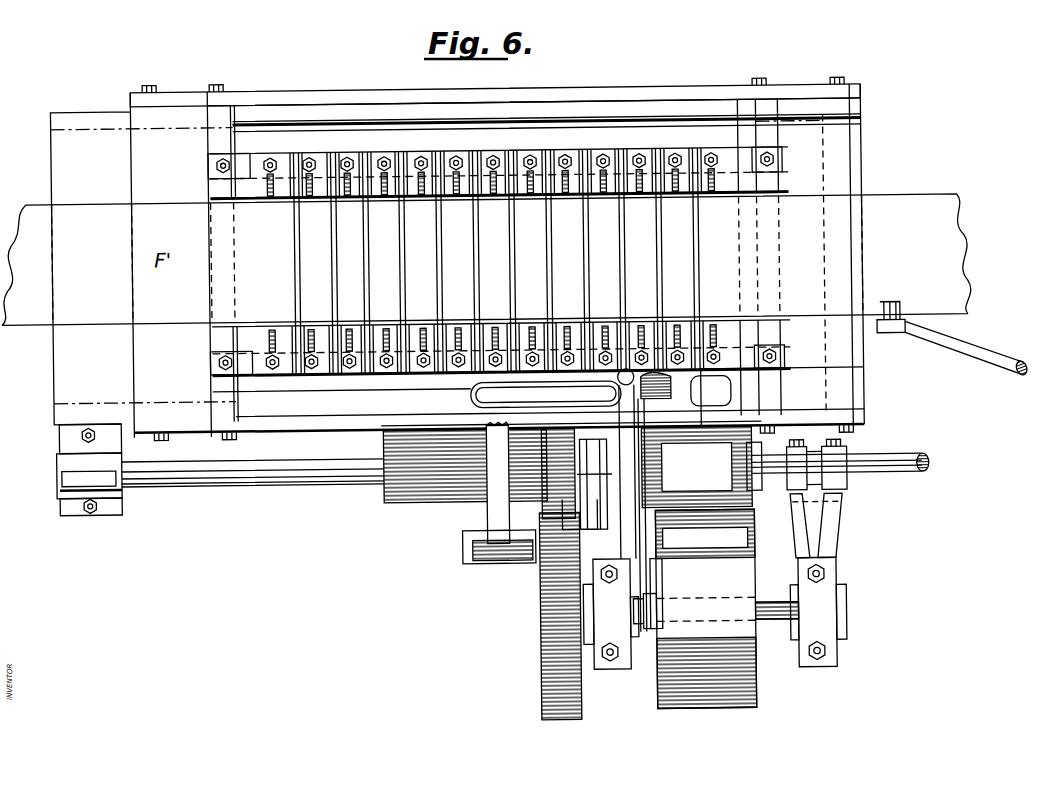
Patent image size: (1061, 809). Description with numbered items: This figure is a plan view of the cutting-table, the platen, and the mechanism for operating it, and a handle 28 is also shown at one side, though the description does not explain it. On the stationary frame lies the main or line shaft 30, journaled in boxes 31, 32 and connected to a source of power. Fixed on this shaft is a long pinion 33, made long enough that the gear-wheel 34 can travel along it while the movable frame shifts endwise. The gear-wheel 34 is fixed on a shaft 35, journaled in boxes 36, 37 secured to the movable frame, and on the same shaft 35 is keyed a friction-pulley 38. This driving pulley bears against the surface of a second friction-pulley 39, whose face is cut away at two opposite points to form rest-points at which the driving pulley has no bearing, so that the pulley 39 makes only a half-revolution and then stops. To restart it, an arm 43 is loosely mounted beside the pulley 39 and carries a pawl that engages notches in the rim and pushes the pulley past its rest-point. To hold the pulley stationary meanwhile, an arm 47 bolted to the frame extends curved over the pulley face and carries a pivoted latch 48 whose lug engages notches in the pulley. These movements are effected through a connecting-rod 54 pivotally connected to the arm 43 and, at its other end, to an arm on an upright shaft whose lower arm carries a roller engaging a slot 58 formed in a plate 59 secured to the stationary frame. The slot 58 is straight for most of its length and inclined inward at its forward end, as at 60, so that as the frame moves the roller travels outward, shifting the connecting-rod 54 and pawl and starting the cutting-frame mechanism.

The handle 28 is at (1040, 316).
The shaft 30 is at (276, 483).
The box 31 is at (55, 474).
The box 32 is at (845, 478).
The long pinion 33 is at (465, 480).
The gear-wheel 34 is at (545, 510).
The shaft 35 is at (588, 531).
The box 36 is at (842, 456).
The box 37 is at (594, 484).
The friction-pulley 38 is at (701, 466).
The friction-pulley 39 is at (751, 600).
The arm 43 is at (645, 640).
The arm 47 is at (705, 540).
The latch 48 is at (684, 631).
The connecting-rod 54 is at (635, 403).
The slot 58 is at (470, 389).
The plate 59 is at (478, 404).
The inclined portion 60 is at (606, 383).